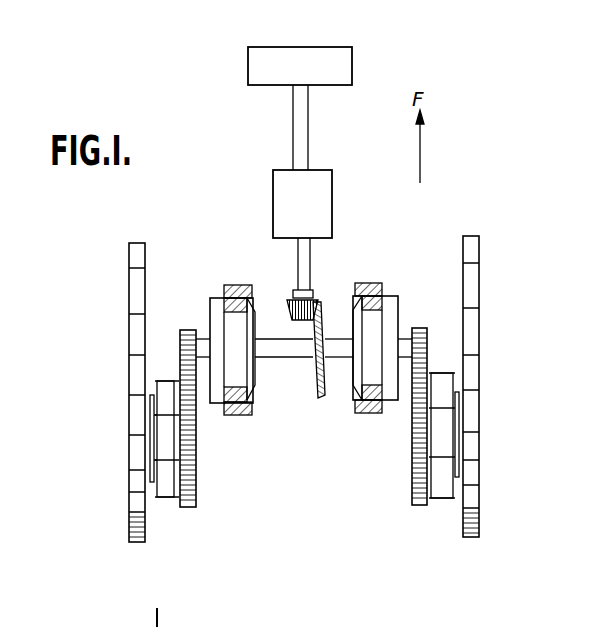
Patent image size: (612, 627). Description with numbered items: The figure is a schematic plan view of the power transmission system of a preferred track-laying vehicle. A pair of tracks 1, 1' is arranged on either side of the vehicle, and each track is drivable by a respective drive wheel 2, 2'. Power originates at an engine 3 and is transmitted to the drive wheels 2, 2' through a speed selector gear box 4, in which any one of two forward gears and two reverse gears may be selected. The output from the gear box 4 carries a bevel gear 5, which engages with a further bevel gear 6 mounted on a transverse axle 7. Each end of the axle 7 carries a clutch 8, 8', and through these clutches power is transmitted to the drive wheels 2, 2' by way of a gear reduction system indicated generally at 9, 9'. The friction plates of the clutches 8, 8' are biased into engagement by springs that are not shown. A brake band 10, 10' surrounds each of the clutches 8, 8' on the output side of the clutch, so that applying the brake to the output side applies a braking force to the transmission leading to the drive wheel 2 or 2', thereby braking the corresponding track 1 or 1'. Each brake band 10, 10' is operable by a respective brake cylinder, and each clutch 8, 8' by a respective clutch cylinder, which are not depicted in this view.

The track 1 is at (154, 384).
The track 1' is at (489, 384).
The drive wheel 2 is at (122, 439).
The drive wheel 2' is at (473, 458).
The engine 3 is at (347, 69).
The speed selector gear box 4 is at (328, 204).
The bevel gear 5 is at (318, 300).
The bevel gear 6 is at (316, 396).
The transverse axle 7 is at (288, 352).
The clutch 8 is at (258, 330).
The clutch 8' is at (390, 329).
The gear reduction system 9 is at (187, 384).
The gear reduction system 9' is at (432, 391).
The brake band 10 is at (231, 327).
The brake band 10' is at (381, 326).